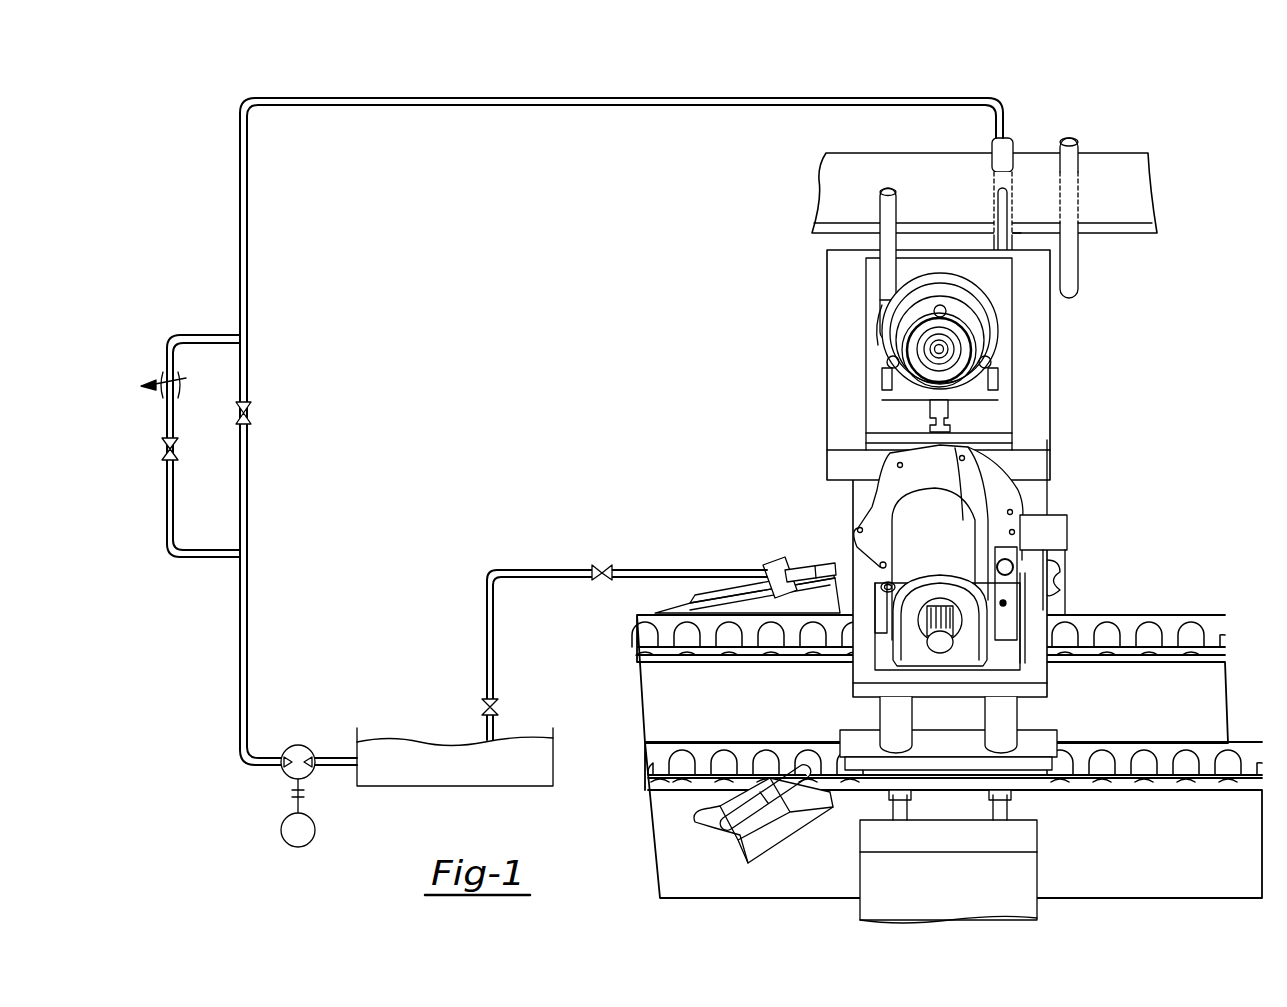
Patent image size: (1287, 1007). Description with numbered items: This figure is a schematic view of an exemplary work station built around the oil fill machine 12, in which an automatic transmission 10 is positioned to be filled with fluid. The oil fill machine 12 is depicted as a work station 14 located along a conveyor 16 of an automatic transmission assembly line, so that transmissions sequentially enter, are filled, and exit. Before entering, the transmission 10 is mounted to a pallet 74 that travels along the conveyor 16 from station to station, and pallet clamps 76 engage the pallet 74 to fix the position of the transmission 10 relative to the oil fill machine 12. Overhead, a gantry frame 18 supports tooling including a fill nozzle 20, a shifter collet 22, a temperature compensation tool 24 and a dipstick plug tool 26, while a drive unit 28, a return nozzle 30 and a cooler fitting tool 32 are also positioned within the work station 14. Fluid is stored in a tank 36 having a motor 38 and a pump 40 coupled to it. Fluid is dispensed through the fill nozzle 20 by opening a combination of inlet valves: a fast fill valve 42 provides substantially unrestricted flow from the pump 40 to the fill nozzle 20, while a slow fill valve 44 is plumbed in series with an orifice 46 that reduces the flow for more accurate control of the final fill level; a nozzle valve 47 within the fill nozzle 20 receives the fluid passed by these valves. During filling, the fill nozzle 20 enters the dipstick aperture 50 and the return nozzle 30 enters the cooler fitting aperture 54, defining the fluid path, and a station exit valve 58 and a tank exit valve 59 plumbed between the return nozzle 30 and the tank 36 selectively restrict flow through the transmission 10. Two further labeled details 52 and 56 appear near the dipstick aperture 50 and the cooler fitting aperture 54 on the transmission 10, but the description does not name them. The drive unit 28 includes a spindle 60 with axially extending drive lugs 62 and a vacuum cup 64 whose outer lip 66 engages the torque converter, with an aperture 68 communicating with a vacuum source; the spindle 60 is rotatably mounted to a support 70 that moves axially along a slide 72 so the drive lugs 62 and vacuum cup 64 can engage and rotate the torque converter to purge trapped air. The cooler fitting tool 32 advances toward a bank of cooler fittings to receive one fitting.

The automatic transmission 10 is at (1022, 468).
The oil fill machine 12 is at (720, 505).
The work station 14 is at (228, 100).
The conveyor 16 is at (1186, 608).
The gantry frame 18 is at (835, 205).
The fill nozzle 20 is at (1010, 152).
The shifter collet 22 is at (888, 280).
The temperature compensation tool 24 is at (1012, 335).
The dipstick plug tool 26 is at (1070, 280).
The drive unit 28 is at (862, 340).
The return nozzle 30 is at (798, 545).
The cooler fitting tool 32 is at (760, 810).
The tank 36 is at (383, 786).
The motor 38 is at (281, 830).
The pump 40 is at (300, 748).
The fast fill valve 42 is at (252, 414).
The slow fill valve 44 is at (180, 449).
The orifice 46 is at (182, 387).
The nozzle valve 47 is at (1030, 238).
The dipstick aperture 50 is at (1009, 559).
The fastener 52 is at (1008, 603).
The cooler fitting aperture 54 is at (882, 566).
The fitting 56 is at (880, 598).
The station exit valve 58 is at (600, 563).
The tank exit valve 59 is at (483, 705).
The spindle 60 is at (940, 295).
The drive lugs 62 is at (988, 366).
The vacuum cup 64 is at (960, 378).
The outer lip 66 is at (932, 353).
The aperture 68 is at (940, 360).
The support 70 is at (990, 358).
The slide 72 is at (932, 412).
The pallet 74 is at (1040, 683).
The pallet clamps 76 is at (1055, 582).